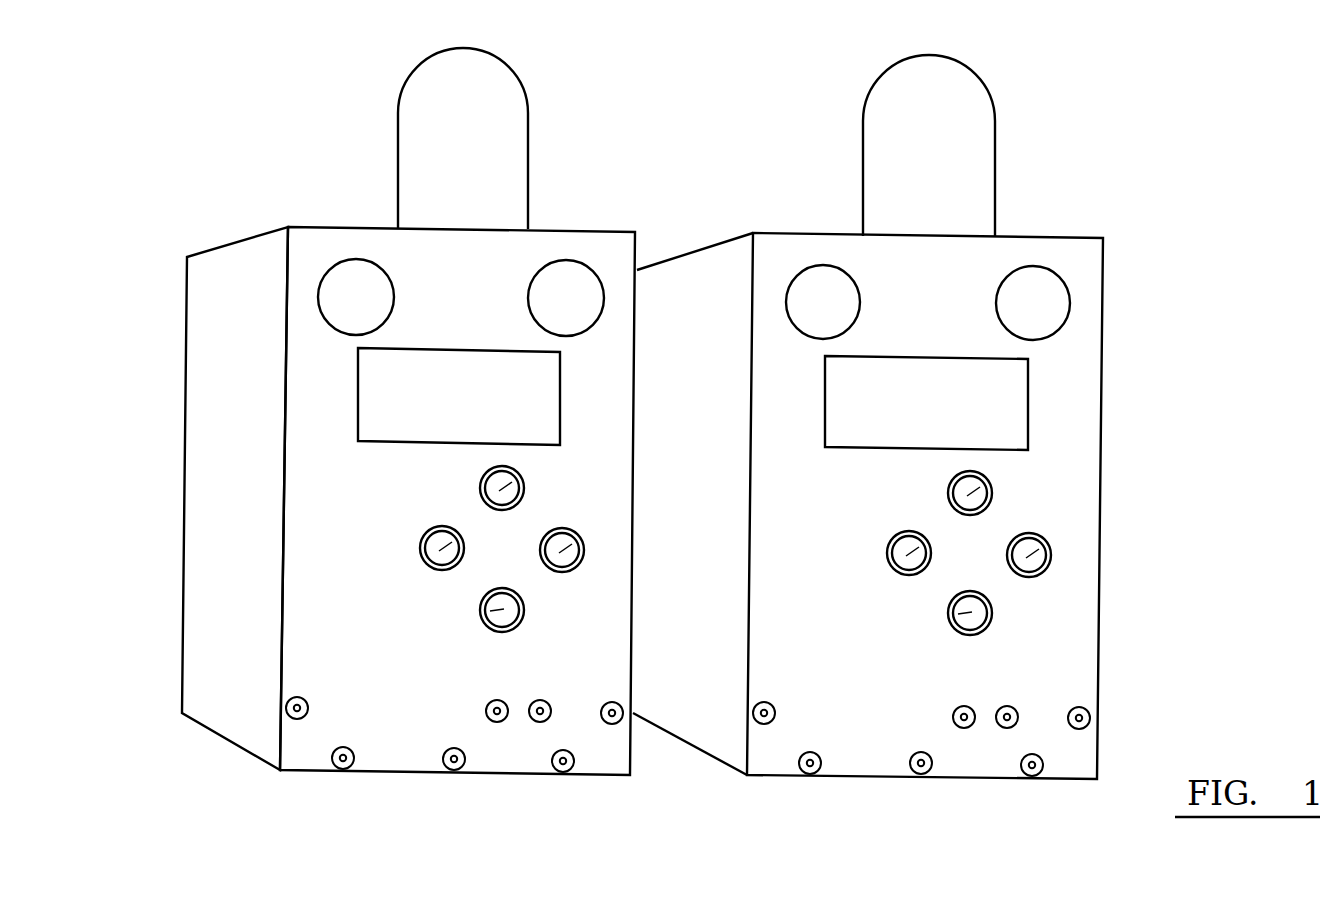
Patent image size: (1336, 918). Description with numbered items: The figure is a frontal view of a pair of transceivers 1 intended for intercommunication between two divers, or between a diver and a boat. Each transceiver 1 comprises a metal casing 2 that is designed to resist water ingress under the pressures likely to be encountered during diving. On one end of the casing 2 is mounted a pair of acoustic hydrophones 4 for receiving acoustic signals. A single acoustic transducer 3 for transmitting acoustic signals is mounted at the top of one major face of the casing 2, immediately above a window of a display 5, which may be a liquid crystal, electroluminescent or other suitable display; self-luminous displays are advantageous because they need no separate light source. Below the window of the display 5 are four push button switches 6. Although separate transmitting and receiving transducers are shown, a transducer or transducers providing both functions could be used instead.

The transceiver 1 is at (651, 413).
The metal casing 2 is at (775, 365).
The acoustic transducer 3 is at (502, 120).
The acoustic hydrophones 4 is at (346, 310).
The display 5 is at (447, 409).
The push button switches 6 is at (525, 477).